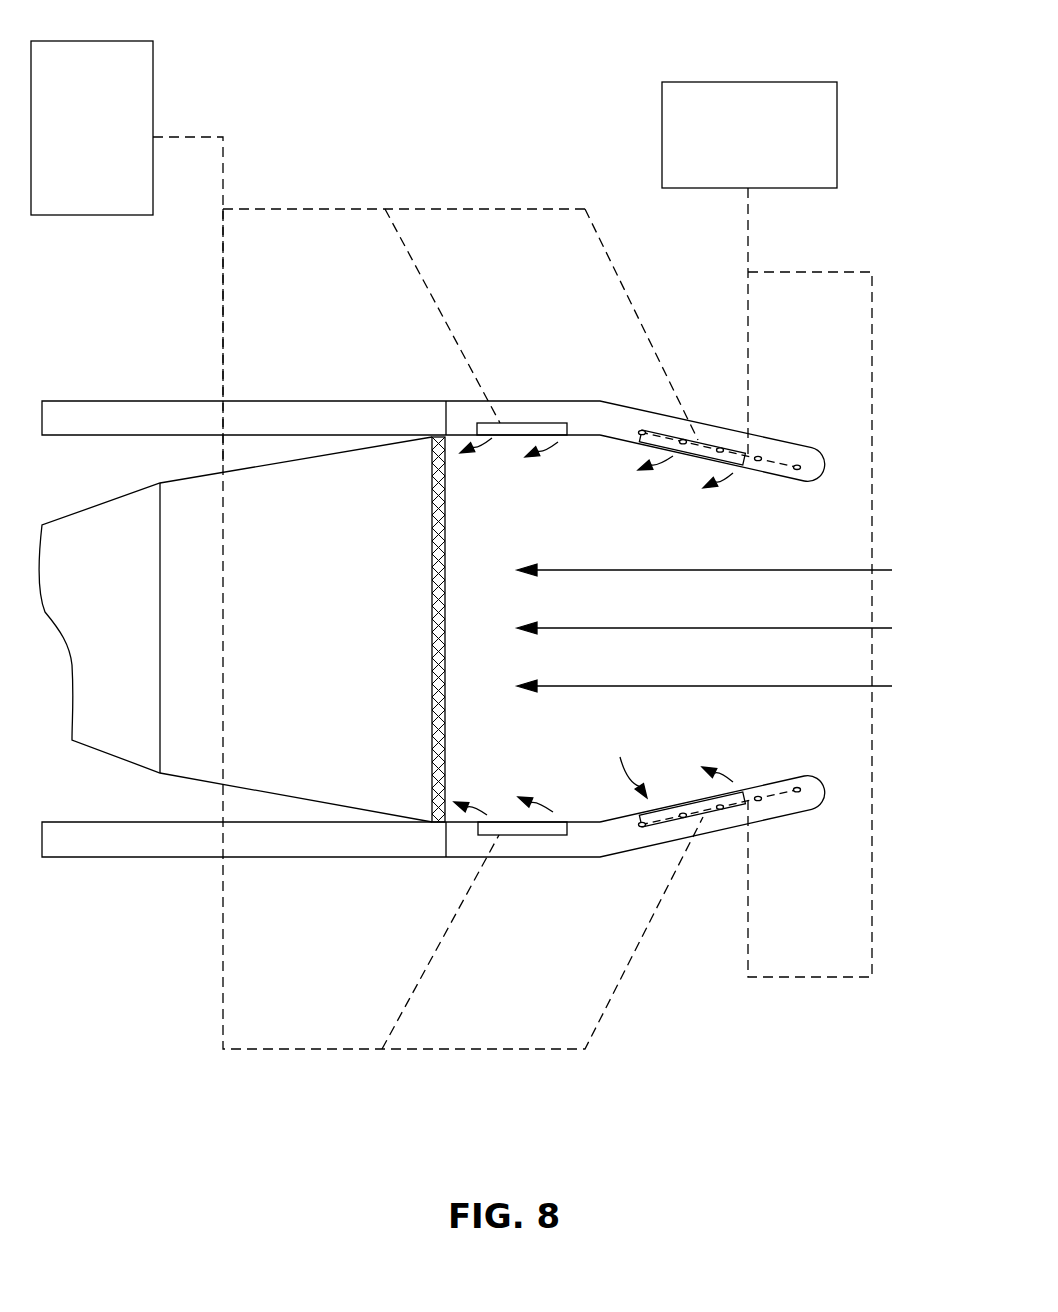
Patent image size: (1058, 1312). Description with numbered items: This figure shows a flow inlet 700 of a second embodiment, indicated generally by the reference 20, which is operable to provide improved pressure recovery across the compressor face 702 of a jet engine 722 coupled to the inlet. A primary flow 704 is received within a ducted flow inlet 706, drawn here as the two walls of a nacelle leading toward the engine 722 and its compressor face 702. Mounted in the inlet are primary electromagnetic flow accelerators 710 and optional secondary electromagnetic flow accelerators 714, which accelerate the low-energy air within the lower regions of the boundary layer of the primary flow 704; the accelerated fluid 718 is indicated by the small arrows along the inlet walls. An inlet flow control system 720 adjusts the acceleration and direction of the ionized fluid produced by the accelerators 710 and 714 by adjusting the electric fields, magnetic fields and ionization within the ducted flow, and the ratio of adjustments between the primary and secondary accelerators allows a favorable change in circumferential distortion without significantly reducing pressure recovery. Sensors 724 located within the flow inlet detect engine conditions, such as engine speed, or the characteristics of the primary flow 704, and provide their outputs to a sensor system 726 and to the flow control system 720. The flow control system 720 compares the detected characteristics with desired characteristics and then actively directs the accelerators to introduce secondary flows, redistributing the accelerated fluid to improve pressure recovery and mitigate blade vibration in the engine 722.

The aircraft 20 is at (888, 52).
The flow inlet 700 is at (744, 74).
The compressor face 702 is at (446, 563).
The primary flow 704 is at (887, 542).
The ducted flow inlet 706 is at (785, 815).
The primary electromagnetic flow accelerator 710 is at (682, 440).
The secondary electromagnetic flow accelerator 714 is at (570, 433).
The fluid 718 is at (655, 465).
The inlet flow control system 720 is at (92, 128).
The engine 722 is at (235, 629).
The sensors 724 is at (758, 462).
The sensor system 726 is at (749, 135).